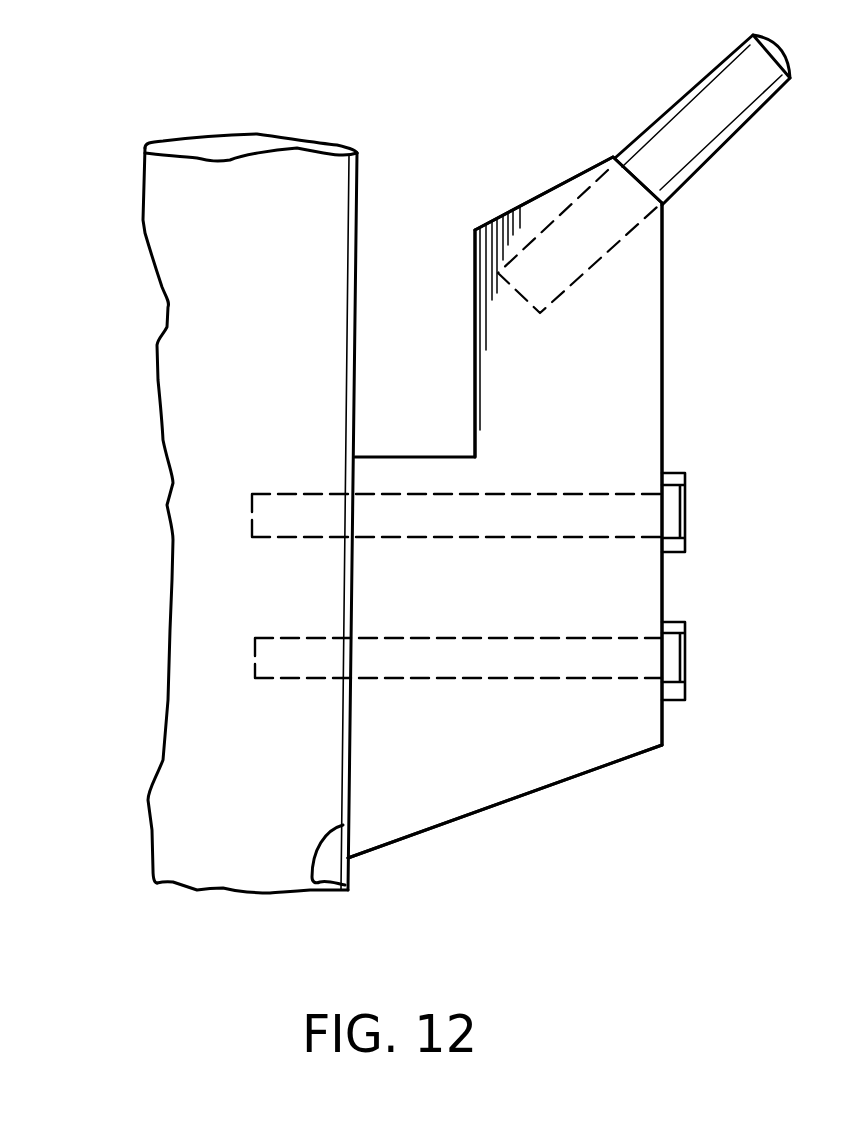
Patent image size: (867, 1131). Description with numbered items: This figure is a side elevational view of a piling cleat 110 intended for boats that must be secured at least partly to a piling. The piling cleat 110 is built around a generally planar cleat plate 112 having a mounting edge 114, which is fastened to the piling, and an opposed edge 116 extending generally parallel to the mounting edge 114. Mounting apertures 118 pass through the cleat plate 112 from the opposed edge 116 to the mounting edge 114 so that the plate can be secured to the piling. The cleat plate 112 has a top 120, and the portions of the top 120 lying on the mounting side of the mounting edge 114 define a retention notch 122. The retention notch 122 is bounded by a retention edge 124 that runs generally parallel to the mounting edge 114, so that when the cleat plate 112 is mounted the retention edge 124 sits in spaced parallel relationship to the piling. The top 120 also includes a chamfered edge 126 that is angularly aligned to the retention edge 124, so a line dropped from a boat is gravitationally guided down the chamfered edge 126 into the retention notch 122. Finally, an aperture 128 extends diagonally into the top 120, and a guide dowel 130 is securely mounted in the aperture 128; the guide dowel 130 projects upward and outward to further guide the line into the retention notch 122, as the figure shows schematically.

The piling cleat 110 is at (676, 389).
The cleat plate 112 is at (583, 752).
The mounting edge 114 is at (312, 892).
The opposed edge 116 is at (663, 425).
The mounting apertures 118 is at (612, 537).
The top 120 is at (613, 157).
The retention notch 122 is at (405, 393).
The retention edge 124 is at (475, 298).
The chamfered edge 126 is at (530, 200).
The aperture 128 is at (620, 248).
The guide dowel 130 is at (672, 107).